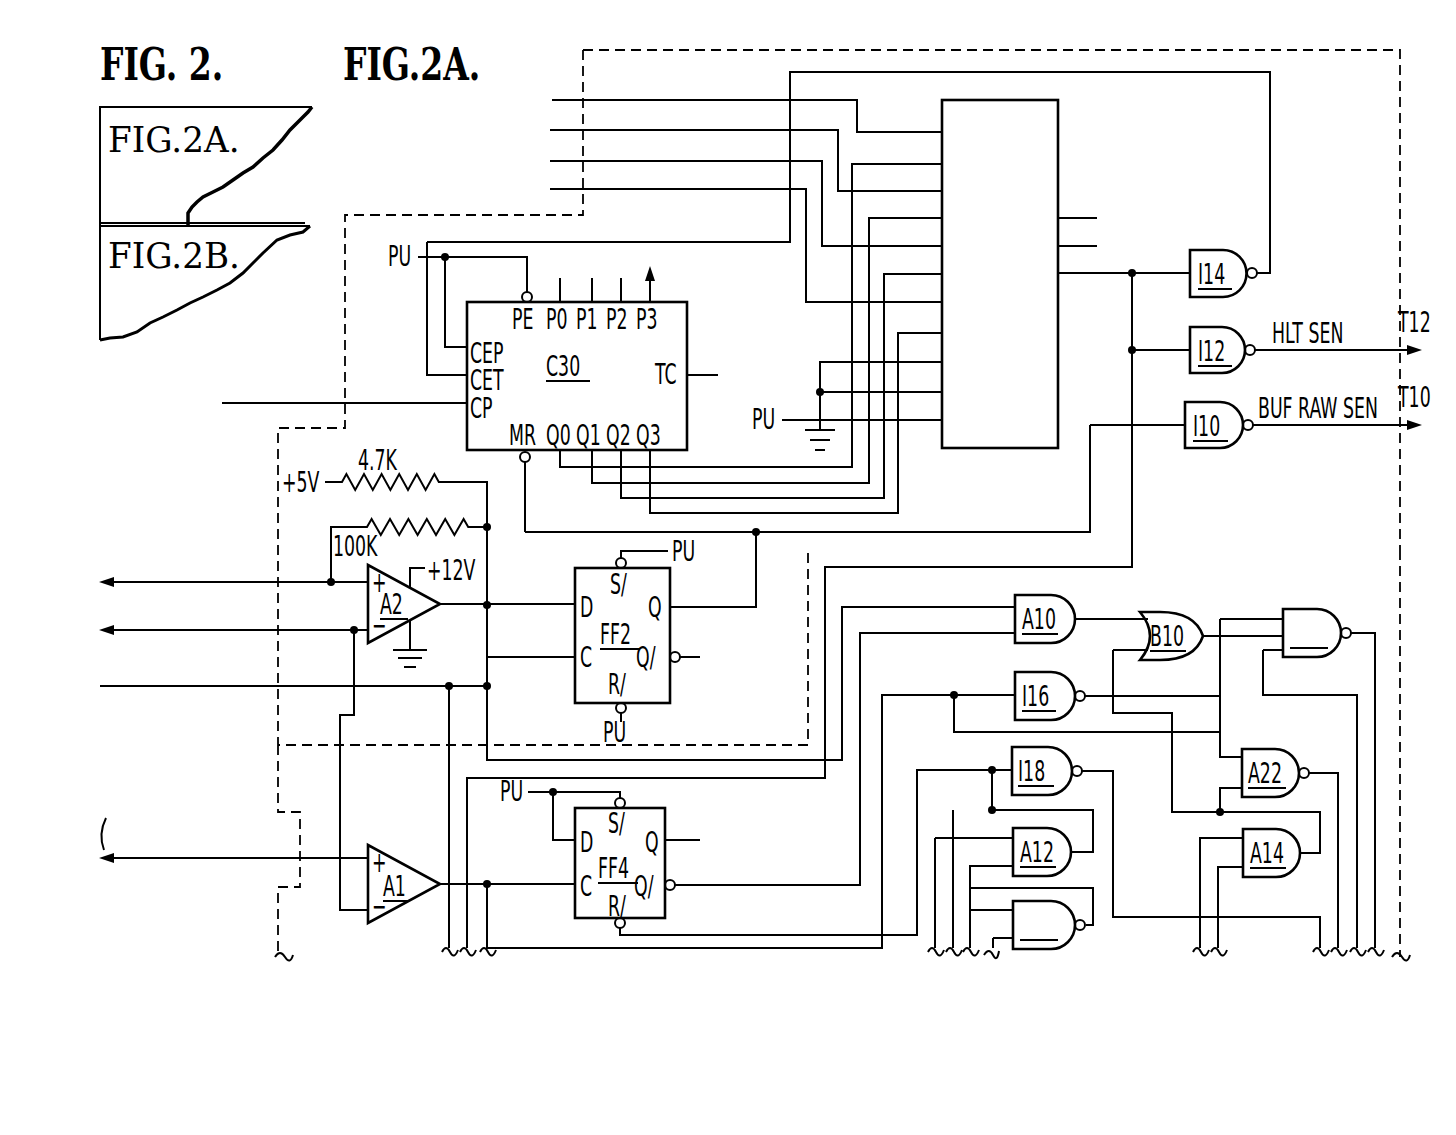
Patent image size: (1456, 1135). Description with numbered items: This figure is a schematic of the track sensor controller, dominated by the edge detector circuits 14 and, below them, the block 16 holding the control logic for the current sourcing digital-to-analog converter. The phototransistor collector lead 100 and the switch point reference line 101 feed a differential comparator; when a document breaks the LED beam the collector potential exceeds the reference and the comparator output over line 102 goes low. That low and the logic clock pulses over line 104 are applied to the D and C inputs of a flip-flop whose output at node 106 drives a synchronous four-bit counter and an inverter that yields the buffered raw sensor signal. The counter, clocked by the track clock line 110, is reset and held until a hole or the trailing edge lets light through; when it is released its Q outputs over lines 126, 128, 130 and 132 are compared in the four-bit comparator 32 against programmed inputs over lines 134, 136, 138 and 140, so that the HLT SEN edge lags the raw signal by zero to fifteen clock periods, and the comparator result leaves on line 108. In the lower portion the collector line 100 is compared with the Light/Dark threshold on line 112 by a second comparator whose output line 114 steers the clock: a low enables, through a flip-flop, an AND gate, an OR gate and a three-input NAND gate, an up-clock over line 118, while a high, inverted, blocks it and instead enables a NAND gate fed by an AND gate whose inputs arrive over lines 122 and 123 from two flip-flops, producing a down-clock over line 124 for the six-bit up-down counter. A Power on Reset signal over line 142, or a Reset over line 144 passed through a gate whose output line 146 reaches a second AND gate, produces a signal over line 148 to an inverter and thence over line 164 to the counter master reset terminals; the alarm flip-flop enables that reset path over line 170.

The edge detector circuits 14 is at (414, 216).
The current sourcing digital to analog converter and control circuitry 16 is at (1424, 602).
The four bit comparator 32 is at (1028, 170).
The collector lead 100 is at (330, 632).
The switch point reference line 101 is at (245, 576).
The differential comparator output line 102 is at (542, 604).
The logic clock line 104 is at (330, 688).
The flip-flop output node 106 is at (756, 540).
The comparator output line 108 is at (1132, 320).
The track clock line 110 is at (280, 402).
The Light/Dark threshold line 112 is at (193, 861).
The comparator A1 output line 114 is at (554, 886).
The up-clock line 118 is at (1352, 628).
The flip-flop FF6 output line 122 is at (1200, 905).
The flip-flop FF8 output line 123 is at (1218, 905).
The down-clock line 124 is at (1340, 906).
The counter output Q0 line 126 is at (735, 468).
The counter output Q1 line 128 is at (590, 483).
The counter output Q2 line 130 is at (620, 498).
The counter output Q3 line 132 is at (654, 514).
The programmed input line A0 134 is at (604, 100).
The programmed input line A1 136 is at (634, 130).
The programmed input line A2 138 is at (665, 161).
The programmed input line A3 140 is at (695, 189).
The Power on Reset signal line 142 is at (625, 242).
The Reset signal line 144 is at (1006, 930).
The NAND gate A20 output line 146 is at (1062, 890).
The reset signal line to inverter I18 148 is at (990, 790).
The counter master reset line 164 is at (1290, 920).
The alarm enable line 170 is at (1000, 955).